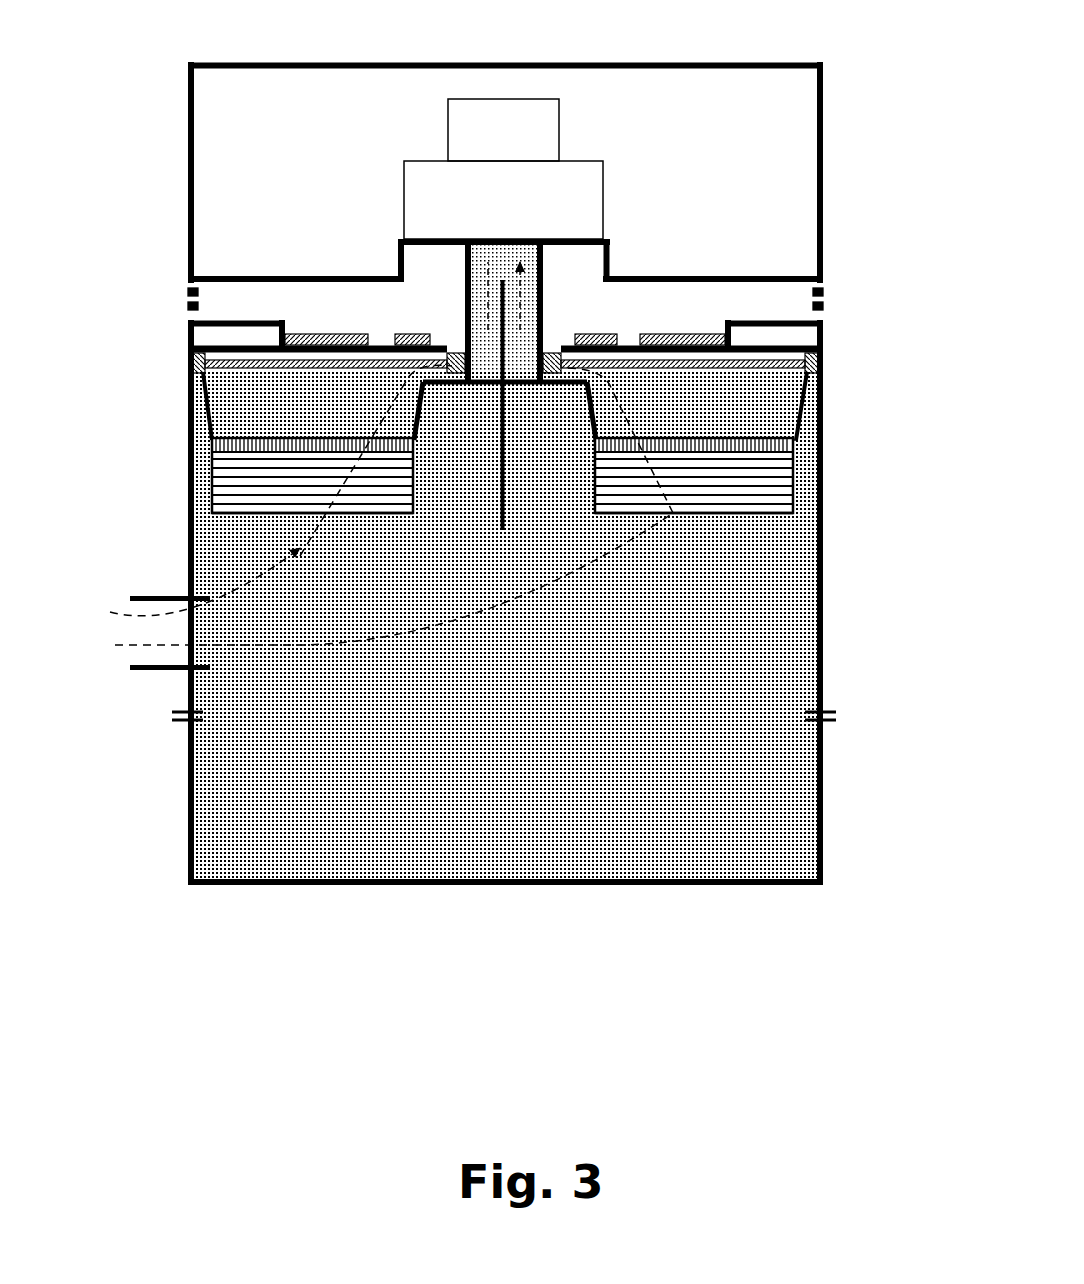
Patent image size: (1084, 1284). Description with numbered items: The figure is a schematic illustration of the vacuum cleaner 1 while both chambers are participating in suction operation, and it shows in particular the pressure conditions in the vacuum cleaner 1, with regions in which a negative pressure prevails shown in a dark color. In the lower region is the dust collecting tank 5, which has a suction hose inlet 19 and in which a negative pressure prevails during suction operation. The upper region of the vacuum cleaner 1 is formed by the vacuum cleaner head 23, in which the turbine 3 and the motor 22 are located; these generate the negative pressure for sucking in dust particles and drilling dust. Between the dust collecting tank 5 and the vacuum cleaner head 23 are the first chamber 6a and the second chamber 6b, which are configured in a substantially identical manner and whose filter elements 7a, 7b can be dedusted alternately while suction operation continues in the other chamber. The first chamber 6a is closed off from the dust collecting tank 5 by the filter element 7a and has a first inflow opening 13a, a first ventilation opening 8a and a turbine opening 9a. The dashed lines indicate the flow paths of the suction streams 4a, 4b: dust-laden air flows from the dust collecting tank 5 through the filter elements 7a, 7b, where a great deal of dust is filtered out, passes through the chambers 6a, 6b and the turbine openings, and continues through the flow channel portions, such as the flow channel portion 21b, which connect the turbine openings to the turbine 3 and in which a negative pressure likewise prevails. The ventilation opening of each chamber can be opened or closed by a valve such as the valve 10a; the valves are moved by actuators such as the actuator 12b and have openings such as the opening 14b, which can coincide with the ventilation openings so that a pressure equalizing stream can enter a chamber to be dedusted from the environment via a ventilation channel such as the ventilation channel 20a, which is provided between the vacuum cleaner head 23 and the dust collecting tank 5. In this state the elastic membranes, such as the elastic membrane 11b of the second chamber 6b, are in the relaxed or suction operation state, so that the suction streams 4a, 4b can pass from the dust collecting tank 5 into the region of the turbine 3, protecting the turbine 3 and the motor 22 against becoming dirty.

The vacuum cleaner 1 is at (780, 975).
The turbine 3 is at (585, 192).
The first suction stream 4a is at (328, 556).
The suction stream 4b is at (568, 614).
The dust collecting tank 5 is at (222, 834).
The first chamber 6a is at (238, 410).
The second chamber 6b is at (775, 410).
The filter element 7a is at (210, 515).
The filter element 7b is at (772, 520).
The first ventilation opening 8a is at (404, 336).
The turbine opening 9a is at (488, 352).
The valve 10a is at (322, 328).
The elastic membrane 11b is at (762, 378).
The actuator 12b is at (790, 338).
The first inflow opening 13a is at (213, 452).
The opening 14b is at (635, 318).
The suction hose inlet 19 is at (147, 655).
The ventilation channel 20a is at (224, 302).
The flow channel portion 21b is at (552, 284).
The motor 22 is at (538, 122).
The vacuum cleaner head 23 is at (783, 113).